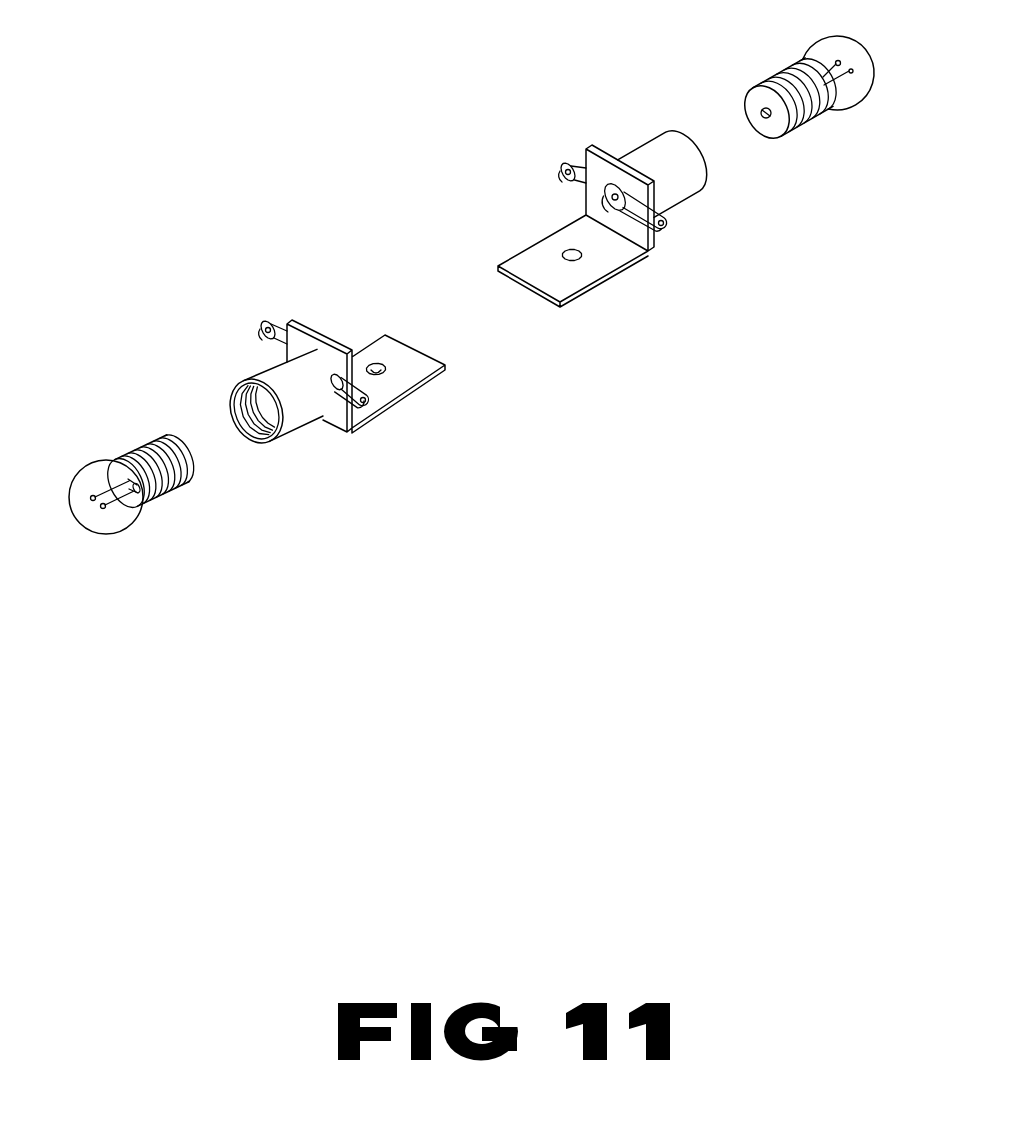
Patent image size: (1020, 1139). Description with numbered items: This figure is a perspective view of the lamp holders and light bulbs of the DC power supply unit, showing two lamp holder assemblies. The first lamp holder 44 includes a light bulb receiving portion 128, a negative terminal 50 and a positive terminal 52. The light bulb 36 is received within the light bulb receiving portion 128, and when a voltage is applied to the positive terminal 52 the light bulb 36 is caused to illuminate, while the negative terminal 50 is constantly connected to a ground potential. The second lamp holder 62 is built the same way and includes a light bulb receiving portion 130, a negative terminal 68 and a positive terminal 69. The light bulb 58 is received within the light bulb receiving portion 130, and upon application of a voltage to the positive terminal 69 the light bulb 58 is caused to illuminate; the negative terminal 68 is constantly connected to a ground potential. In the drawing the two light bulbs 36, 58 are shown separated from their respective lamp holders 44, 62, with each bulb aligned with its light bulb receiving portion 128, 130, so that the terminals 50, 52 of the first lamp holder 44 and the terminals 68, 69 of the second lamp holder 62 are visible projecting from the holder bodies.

The light bulb 36 is at (102, 514).
The light bulb 58 is at (790, 68).
The light bulb receiving portion 128 is at (302, 415).
The light bulb receiving portion 130 is at (650, 149).
The first lamp holder 44 is at (410, 372).
The second lamp holder 62 is at (562, 282).
The negative terminal 50 is at (367, 397).
The positive terminal 52 is at (266, 322).
The negative terminal 68 is at (563, 172).
The positive terminal 69 is at (667, 228).